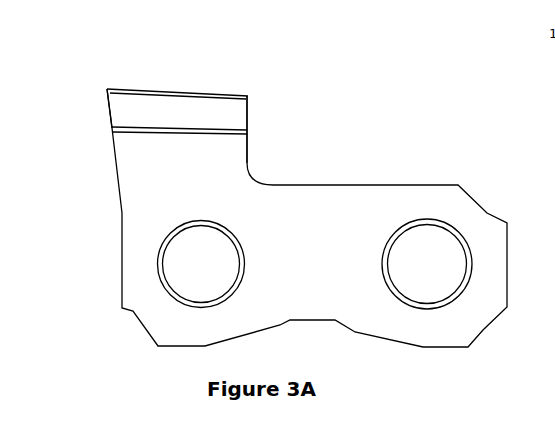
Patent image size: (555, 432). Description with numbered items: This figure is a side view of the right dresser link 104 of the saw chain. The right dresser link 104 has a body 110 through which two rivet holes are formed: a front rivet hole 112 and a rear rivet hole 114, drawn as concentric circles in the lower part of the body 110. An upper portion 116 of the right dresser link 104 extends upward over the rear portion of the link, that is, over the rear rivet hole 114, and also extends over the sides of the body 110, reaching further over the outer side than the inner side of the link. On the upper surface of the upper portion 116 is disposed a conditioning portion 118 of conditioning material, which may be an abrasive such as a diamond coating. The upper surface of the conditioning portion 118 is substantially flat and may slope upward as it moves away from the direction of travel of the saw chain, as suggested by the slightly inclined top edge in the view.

The right dresser link 104 is at (76, 81).
The body 110 is at (320, 270).
The front rivet hole 112 is at (424, 221).
The rear rivet hole 114 is at (160, 252).
The upper portion 116 is at (223, 117).
The conditioning portion 118 is at (182, 90).